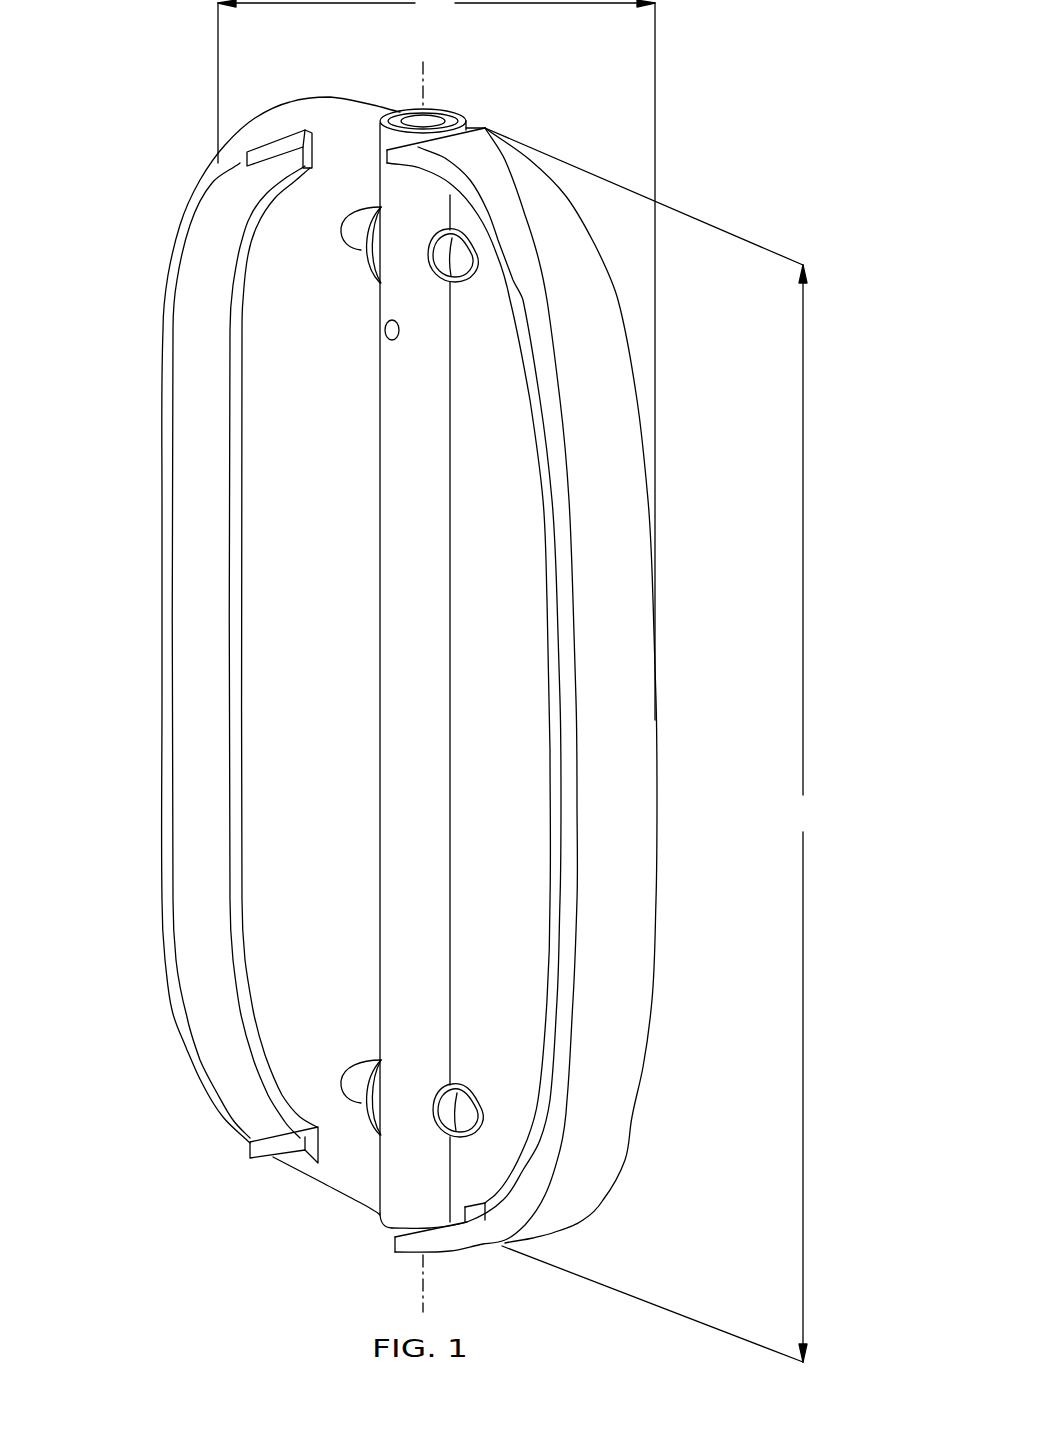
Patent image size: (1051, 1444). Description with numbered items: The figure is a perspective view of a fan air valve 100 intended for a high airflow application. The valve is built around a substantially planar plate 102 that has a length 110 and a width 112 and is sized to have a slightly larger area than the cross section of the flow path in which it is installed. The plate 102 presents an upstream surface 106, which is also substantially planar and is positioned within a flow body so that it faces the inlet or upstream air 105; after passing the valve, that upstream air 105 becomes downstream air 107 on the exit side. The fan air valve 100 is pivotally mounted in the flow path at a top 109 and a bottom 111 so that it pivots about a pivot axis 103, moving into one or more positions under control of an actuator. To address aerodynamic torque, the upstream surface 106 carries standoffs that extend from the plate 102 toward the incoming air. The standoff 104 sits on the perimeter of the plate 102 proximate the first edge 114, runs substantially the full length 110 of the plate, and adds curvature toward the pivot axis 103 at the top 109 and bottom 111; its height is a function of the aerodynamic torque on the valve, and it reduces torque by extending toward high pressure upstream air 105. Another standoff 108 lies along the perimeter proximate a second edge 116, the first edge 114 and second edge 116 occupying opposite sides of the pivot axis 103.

The fan air valve 100 is at (688, 110).
The substantially planar plate 102 is at (322, 100).
The pivot axis 103 is at (424, 80).
The standoff 104 is at (486, 208).
The upstream air 105 is at (72, 700).
The upstream surface 106 is at (338, 1200).
The downstream air 107 is at (750, 700).
The standoff 108 is at (185, 1068).
The top 109 is at (240, 53).
The length 110 is at (653, 745).
The bottom 111 is at (372, 1260).
The width 112 is at (436, 360).
The first edge 114 is at (656, 841).
The second edge 116 is at (218, 163).